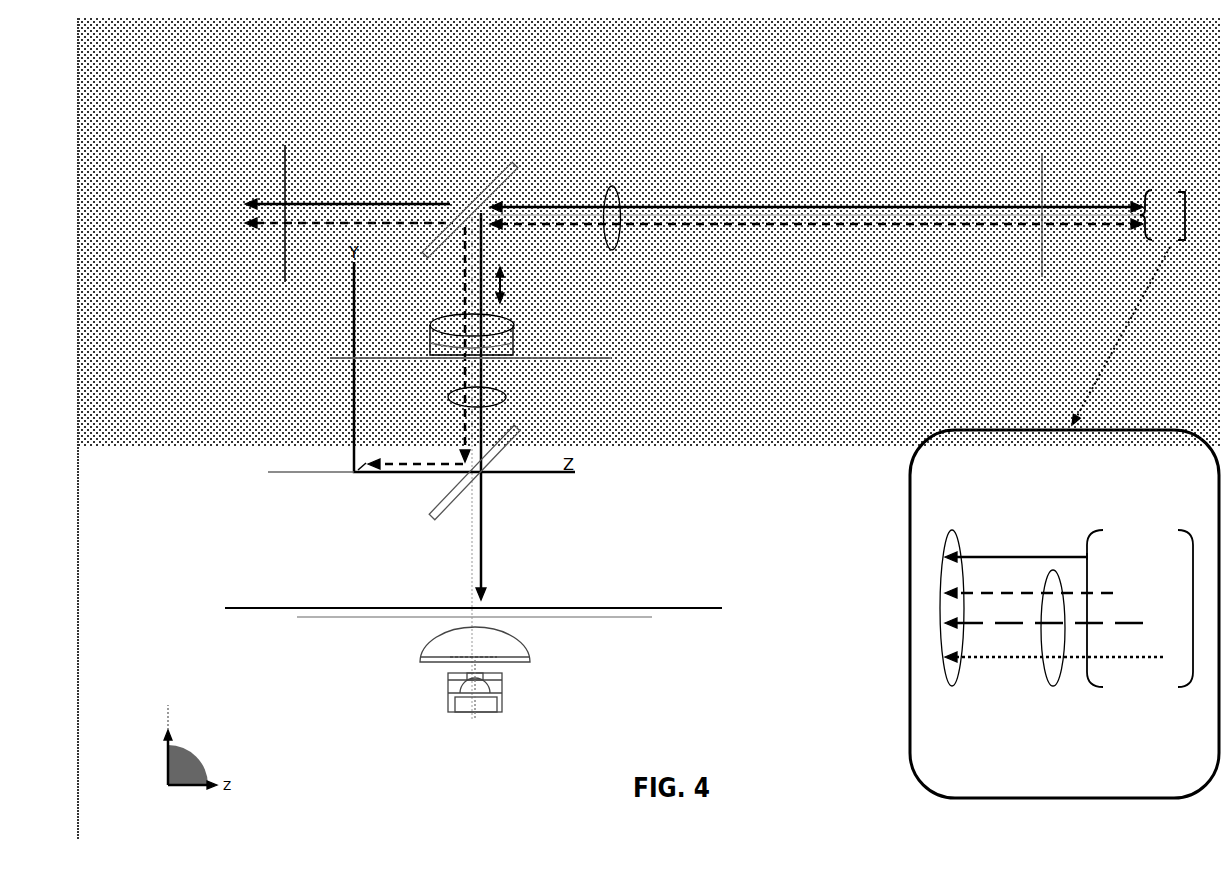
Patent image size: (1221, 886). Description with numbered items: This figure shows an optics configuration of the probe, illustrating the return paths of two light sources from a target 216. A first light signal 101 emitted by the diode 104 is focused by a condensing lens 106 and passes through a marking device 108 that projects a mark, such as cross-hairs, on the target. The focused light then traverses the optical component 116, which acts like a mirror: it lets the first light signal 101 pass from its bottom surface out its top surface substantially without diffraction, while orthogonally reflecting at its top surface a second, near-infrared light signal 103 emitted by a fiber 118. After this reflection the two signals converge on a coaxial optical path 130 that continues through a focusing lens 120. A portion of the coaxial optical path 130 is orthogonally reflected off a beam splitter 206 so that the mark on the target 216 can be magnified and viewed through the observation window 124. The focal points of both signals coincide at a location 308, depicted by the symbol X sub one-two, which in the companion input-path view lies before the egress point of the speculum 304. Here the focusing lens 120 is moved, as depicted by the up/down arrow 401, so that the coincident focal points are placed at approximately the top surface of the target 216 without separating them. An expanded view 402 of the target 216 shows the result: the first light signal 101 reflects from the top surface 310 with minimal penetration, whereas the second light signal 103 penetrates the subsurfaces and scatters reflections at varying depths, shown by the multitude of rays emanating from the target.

The first light signal 101 is at (828, 207).
The second light signal 103 is at (833, 226).
The diode 104 is at (467, 698).
The condensing lens 106 is at (447, 652).
The marking device 108 is at (558, 607).
The optical component 116 is at (518, 435).
The fiber 118 is at (307, 467).
The focusing lens 120 is at (513, 342).
The observation window 124 is at (285, 157).
The coaxial optical path 130 is at (623, 192).
The beam splitter 206 is at (502, 173).
The target 216 is at (1145, 238).
The egress point of the speculum 304 is at (1038, 257).
The location 308 is at (1143, 207).
The top surface 310 is at (1087, 553).
The up/down arrow 401 is at (502, 287).
The expanded view 402 is at (908, 557).